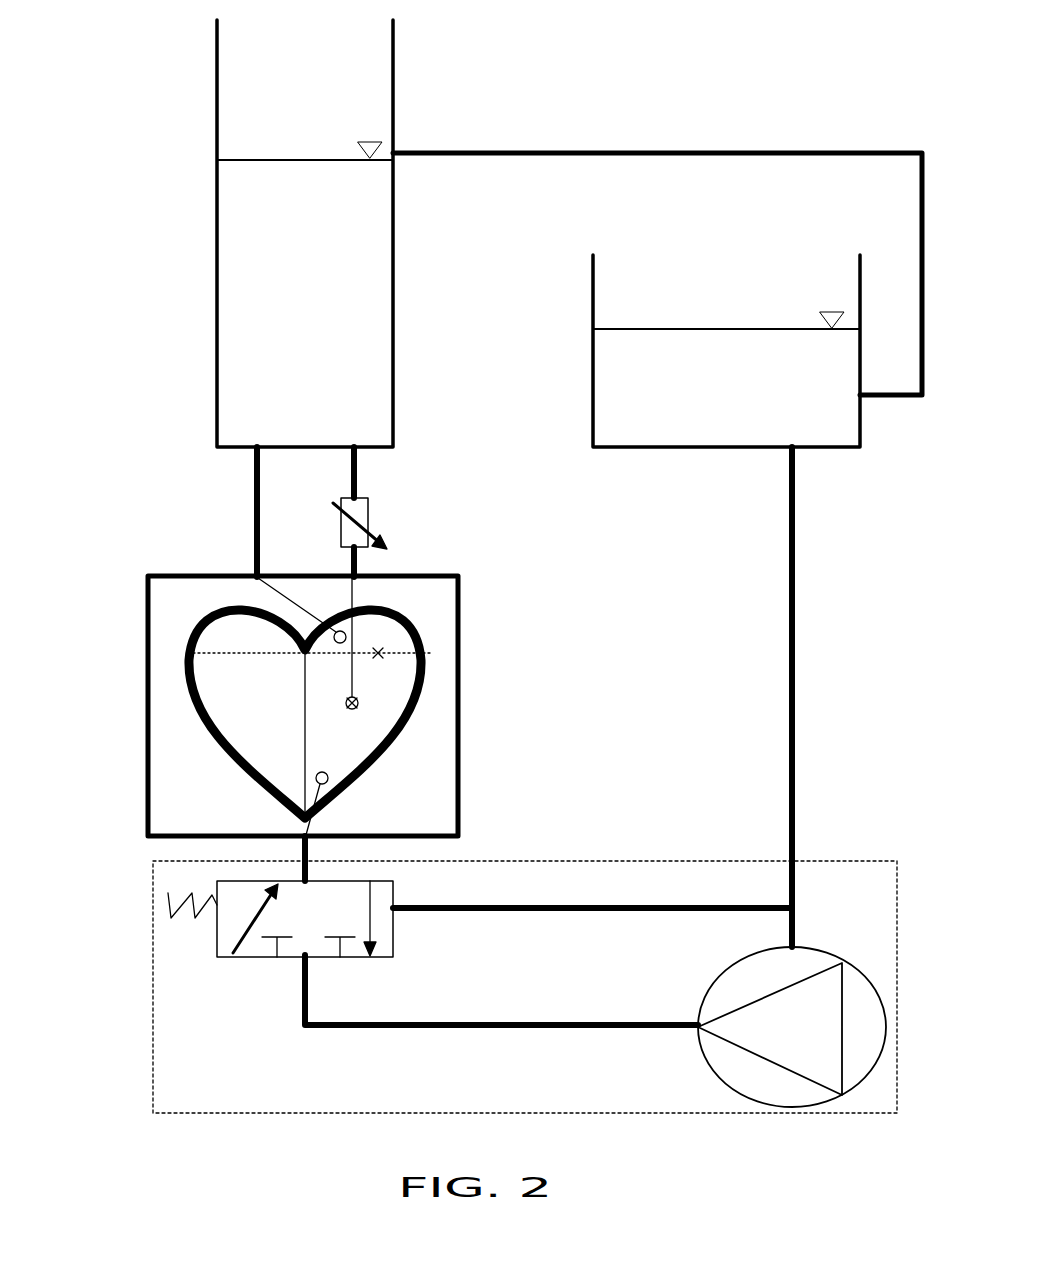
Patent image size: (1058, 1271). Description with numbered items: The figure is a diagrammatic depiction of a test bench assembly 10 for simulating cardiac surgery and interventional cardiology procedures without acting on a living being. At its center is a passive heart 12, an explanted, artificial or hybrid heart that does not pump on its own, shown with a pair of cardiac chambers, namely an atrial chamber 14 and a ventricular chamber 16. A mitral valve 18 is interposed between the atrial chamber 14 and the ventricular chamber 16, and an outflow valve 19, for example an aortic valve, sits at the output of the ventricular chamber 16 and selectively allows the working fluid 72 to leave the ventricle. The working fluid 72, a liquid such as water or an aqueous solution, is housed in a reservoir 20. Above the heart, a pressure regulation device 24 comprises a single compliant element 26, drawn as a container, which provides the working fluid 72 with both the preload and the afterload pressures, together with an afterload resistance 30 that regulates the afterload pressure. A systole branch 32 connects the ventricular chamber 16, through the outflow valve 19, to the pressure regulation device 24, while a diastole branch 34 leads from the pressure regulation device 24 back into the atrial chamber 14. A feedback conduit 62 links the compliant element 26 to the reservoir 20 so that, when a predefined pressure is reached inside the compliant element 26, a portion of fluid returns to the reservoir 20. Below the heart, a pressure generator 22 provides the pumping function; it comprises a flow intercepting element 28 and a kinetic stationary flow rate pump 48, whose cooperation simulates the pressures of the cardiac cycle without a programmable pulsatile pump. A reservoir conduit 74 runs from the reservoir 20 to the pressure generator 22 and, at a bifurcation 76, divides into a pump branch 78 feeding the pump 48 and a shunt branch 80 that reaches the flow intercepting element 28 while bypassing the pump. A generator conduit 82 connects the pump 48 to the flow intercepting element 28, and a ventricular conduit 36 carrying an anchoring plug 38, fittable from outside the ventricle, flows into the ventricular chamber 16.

The test bench assembly 10 is at (148, 275).
The passive heart 12 is at (460, 792).
The atrial chamber 14 is at (440, 616).
The ventricular chamber 16 is at (370, 735).
The mitral valve 18 is at (382, 657).
The outflow valve 19 is at (358, 705).
The reservoir 20 is at (838, 452).
The pressure generator 22 is at (153, 1018).
The pressure regulation device 24 is at (395, 398).
The compliant element 26 is at (238, 350).
The flow intercepting element 28 is at (263, 942).
The afterload resistance 30 is at (370, 497).
The systole branch 32 is at (255, 502).
The diastole branch 34 is at (360, 565).
The ventricular conduit 36 is at (300, 847).
The anchoring plug 38 is at (312, 790).
The kinetic stationary flow rate pump 48 is at (738, 1058).
The feedback conduit 62 is at (622, 150).
The working fluid 72 is at (268, 182).
The reservoir conduit 74 is at (790, 570).
The bifurcation 76 is at (792, 905).
The pump branch 78 is at (796, 928).
The shunt branch 80 is at (530, 905).
The generator conduit 82 is at (430, 1028).